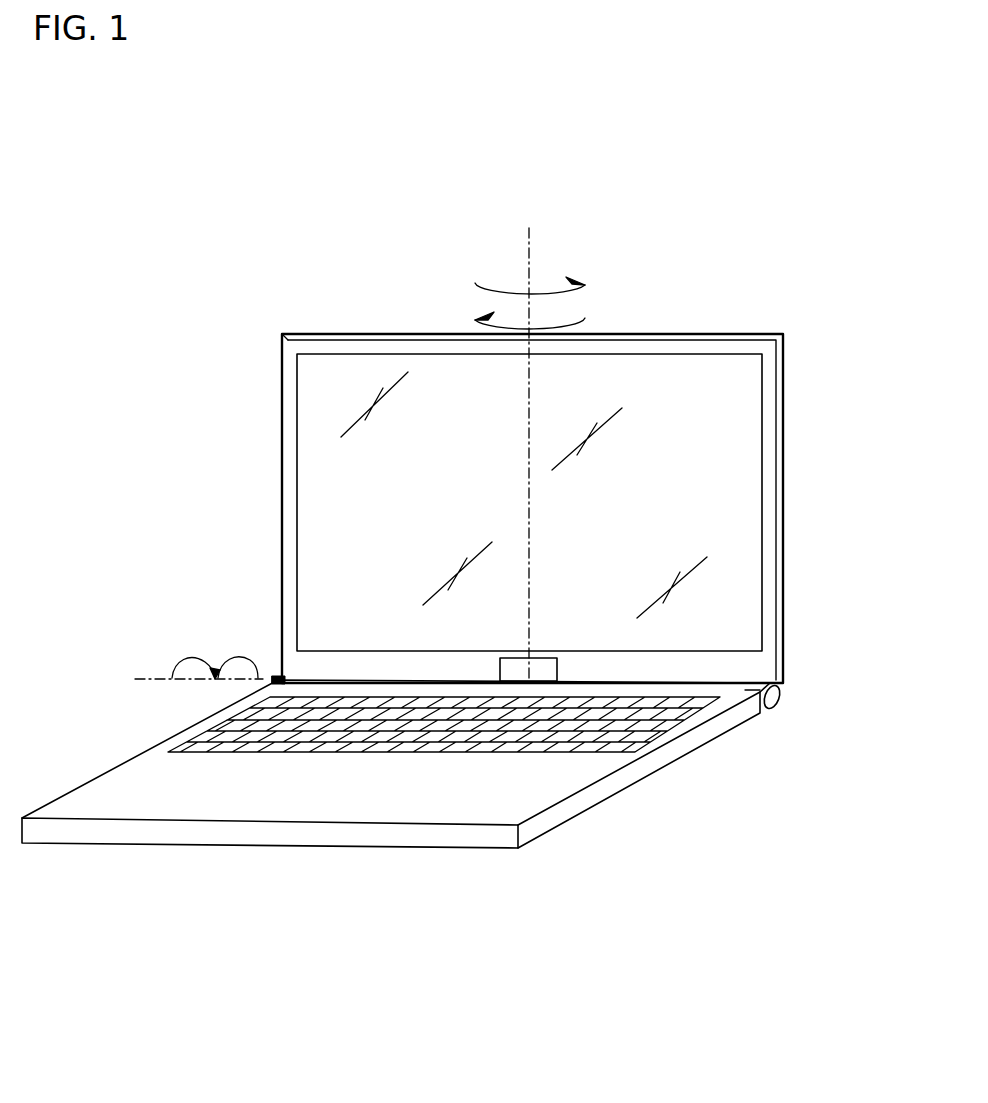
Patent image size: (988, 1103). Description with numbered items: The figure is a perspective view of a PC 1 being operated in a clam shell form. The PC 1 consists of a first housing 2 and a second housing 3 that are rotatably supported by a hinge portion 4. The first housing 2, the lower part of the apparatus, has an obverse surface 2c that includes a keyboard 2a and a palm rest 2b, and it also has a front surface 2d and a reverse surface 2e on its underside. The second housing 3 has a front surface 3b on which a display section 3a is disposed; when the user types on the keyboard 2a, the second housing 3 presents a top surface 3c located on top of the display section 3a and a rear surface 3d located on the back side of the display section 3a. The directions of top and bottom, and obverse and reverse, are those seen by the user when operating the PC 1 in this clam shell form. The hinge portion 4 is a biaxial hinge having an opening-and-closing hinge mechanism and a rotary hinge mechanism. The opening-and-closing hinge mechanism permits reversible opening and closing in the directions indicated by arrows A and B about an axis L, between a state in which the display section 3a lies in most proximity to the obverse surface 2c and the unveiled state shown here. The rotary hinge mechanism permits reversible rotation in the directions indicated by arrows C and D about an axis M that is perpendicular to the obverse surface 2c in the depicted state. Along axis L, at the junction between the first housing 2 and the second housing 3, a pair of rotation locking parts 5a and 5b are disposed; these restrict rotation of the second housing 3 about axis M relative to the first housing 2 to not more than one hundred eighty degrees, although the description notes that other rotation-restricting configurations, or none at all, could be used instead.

The PC 1 is at (150, 476).
The first housing 2 is at (133, 865).
The keyboard 2a is at (213, 726).
The palm rest 2b is at (159, 754).
The obverse surface 2c is at (132, 692).
The front surface 2d is at (350, 833).
The reverse surface 2e is at (388, 850).
The second housing 3 is at (272, 323).
The display section 3a is at (310, 423).
The front surface 3b is at (771, 405).
The top surface 3c is at (395, 339).
The rear surface 3d is at (700, 333).
The hinge portion 4 is at (560, 660).
The rotation locking part 5a is at (272, 674).
The rotation locking part 5b is at (780, 699).
The axis L is at (140, 678).
The arrow A is at (183, 654).
The arrow B is at (228, 656).
The arrow C is at (585, 318).
The arrow D is at (585, 286).
The axis M is at (530, 238).